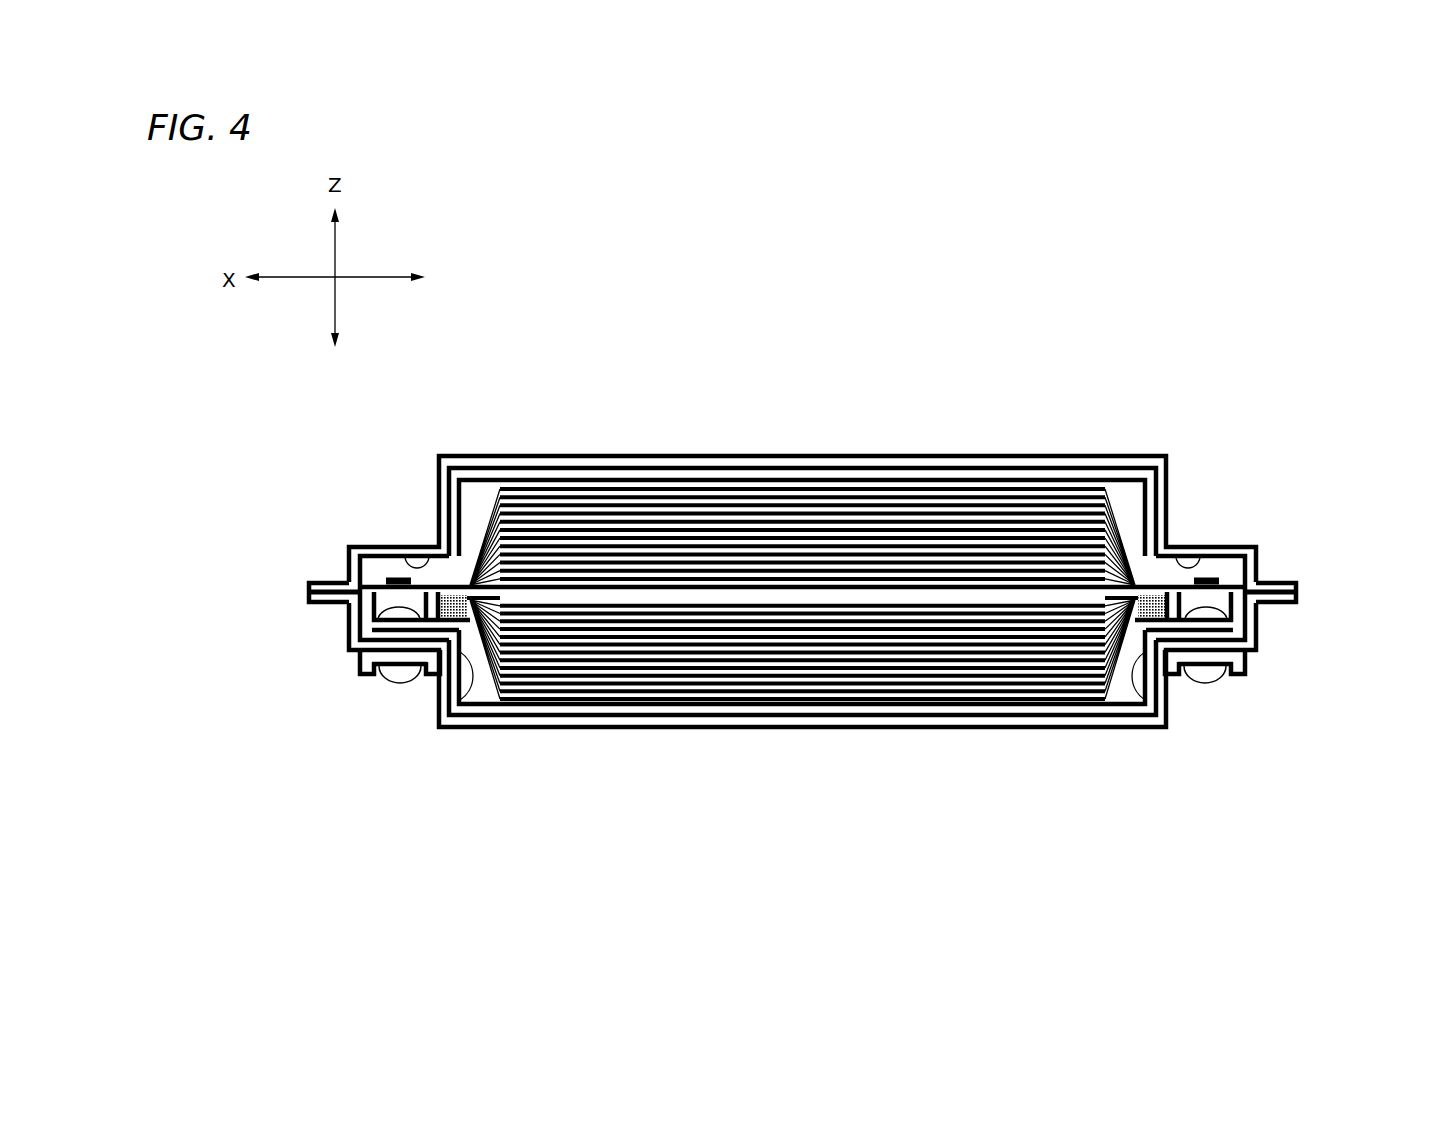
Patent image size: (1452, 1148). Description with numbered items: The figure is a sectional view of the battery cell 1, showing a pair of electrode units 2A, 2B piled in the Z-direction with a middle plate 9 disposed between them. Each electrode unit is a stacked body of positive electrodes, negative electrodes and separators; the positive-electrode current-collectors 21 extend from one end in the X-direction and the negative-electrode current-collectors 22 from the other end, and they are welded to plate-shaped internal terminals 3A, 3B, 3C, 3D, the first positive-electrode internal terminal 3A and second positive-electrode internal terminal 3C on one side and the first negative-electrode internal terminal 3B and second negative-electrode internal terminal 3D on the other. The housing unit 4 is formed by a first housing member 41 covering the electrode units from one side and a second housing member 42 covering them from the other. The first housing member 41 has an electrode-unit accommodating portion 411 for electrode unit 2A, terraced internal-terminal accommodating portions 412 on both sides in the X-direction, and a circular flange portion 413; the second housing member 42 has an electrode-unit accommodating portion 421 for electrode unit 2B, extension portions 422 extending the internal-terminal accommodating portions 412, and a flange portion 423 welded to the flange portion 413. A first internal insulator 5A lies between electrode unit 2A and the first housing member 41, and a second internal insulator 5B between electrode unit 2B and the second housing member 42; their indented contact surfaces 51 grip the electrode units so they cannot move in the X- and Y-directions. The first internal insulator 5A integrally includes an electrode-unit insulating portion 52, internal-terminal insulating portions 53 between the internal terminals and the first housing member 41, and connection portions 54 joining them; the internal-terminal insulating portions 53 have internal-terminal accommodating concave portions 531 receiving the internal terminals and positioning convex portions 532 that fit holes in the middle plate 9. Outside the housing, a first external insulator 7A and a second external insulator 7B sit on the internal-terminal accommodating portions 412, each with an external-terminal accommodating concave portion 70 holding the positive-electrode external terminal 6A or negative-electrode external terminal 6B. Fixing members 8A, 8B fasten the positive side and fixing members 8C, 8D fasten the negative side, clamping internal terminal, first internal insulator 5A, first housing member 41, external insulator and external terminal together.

The battery cell 1 is at (815, 596).
The housing unit 4 is at (802, 611).
The first housing member 41 is at (610, 729).
The electrode-unit accommodating portion 411 is at (750, 704).
The internal-terminal accommodating portions 412 is at (365, 628).
The flange portion 413 is at (305, 593).
The second housing member 42 is at (610, 456).
The electrode-unit accommodating portion 421 is at (860, 467).
The extension portions 422 is at (410, 577).
The flange portion 423 is at (345, 575).
The middle plate 9 is at (536, 588).
The electrode unit 2A is at (920, 660).
The electrode unit 2B is at (925, 525).
The positive-electrode current-collector 21 is at (490, 515).
The negative-electrode current-collector 22 is at (1122, 543).
The first positive-electrode internal terminal 3A is at (828, 482).
The first negative-electrode internal terminal 3B is at (828, 482).
The second positive-electrode internal terminal 3C is at (828, 482).
The second negative-electrode internal terminal 3D is at (828, 482).
The contact surface 51 is at (802, 602).
The electrode-unit insulating portion 52 is at (802, 602).
The first internal insulator 5A is at (1000, 706).
The second internal insulator 5B is at (1060, 478).
The internal-terminal insulating portions 53 is at (788, 640).
The internal-terminal accommodating concave portions 531 is at (375, 600).
The positioning convex portions 532 is at (400, 610).
The connection portions 54 is at (455, 640).
The positive-electrode external terminal 6A is at (789, 731).
The negative-electrode external terminal 6B is at (789, 731).
The first external insulator 7A is at (788, 701).
The second external insulator 7B is at (362, 668).
The external-terminal accommodating concave portions 70 is at (363, 677).
The first fixing member 8A is at (797, 770).
The second fixing member 8B is at (797, 770).
The third fixing member 8C is at (797, 770).
The fourth fixing member 8D is at (397, 677).